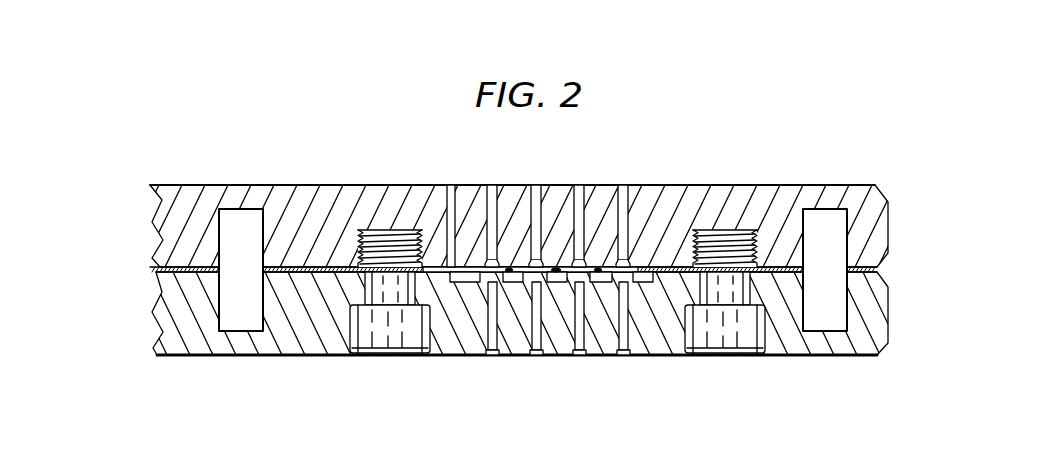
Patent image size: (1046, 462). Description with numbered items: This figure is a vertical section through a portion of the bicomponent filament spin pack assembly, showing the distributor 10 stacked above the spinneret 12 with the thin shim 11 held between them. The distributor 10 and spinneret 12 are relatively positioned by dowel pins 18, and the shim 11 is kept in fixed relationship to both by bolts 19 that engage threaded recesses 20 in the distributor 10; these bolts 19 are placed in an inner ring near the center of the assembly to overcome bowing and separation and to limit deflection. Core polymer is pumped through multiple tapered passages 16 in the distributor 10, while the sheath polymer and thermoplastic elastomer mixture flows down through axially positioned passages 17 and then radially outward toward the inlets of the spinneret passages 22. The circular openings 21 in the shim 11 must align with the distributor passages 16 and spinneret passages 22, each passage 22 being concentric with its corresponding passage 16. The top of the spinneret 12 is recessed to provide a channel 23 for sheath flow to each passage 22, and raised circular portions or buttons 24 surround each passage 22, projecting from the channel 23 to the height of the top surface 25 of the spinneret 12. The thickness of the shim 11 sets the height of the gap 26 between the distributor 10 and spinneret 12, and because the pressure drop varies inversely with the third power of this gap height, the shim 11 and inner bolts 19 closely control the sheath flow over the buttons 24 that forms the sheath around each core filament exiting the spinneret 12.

The distributor 10 is at (843, 185).
The shim 11 is at (150, 268).
The spinneret 12 is at (882, 351).
The passages 16 is at (628, 185).
The passages 17 is at (451, 190).
The dowel pins 18 is at (213, 207).
The bolts 19 is at (352, 246).
The threaded recesses 20 is at (428, 226).
The circular openings 21 is at (488, 240).
The passages 22 is at (492, 284).
The channel 23 is at (536, 288).
The raised circular portions or buttons 24 is at (553, 270).
The top surface 25 is at (289, 265).
The gap 26 is at (601, 283).